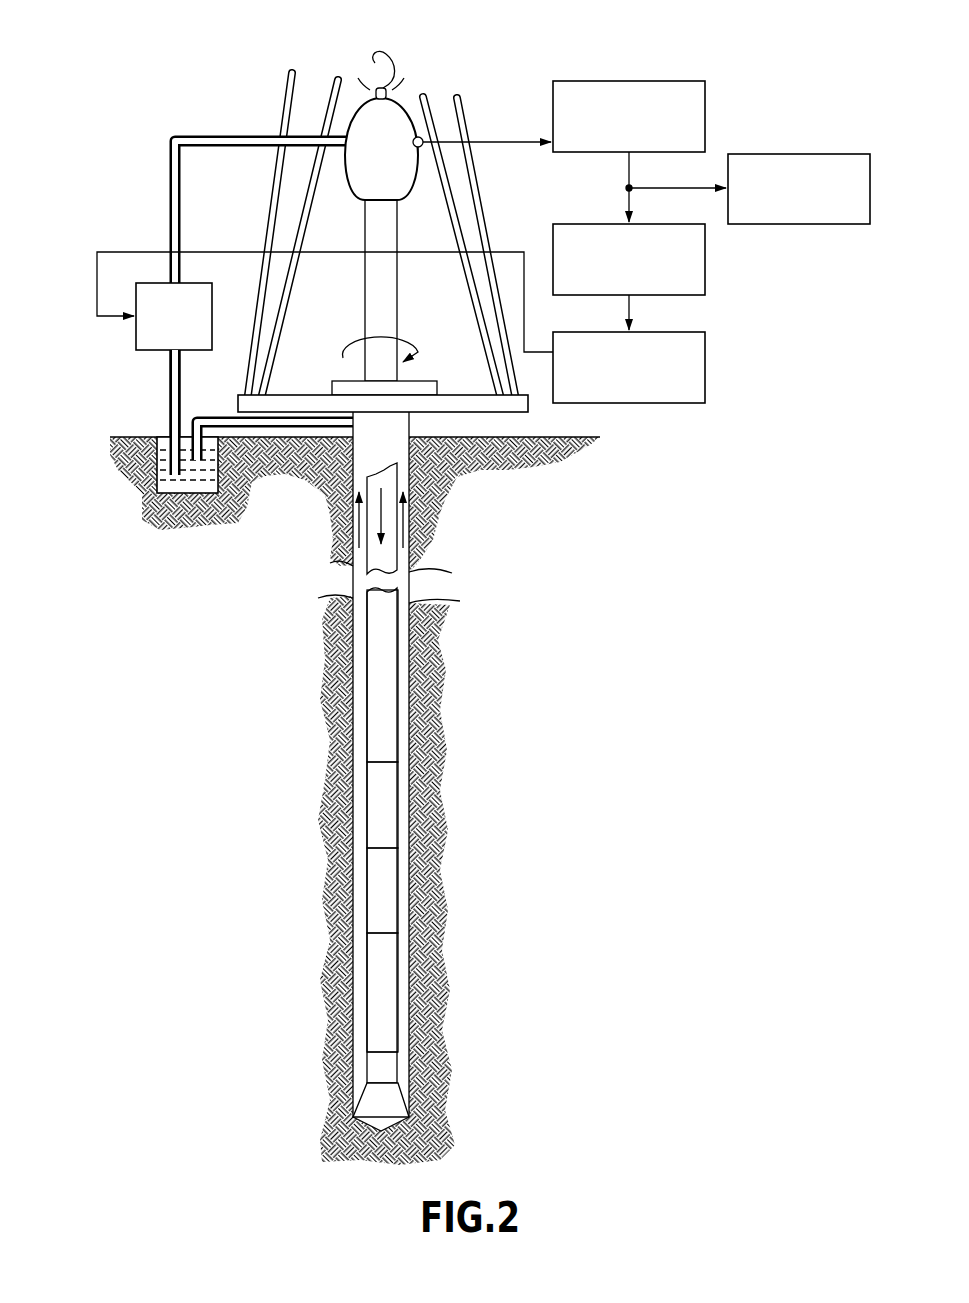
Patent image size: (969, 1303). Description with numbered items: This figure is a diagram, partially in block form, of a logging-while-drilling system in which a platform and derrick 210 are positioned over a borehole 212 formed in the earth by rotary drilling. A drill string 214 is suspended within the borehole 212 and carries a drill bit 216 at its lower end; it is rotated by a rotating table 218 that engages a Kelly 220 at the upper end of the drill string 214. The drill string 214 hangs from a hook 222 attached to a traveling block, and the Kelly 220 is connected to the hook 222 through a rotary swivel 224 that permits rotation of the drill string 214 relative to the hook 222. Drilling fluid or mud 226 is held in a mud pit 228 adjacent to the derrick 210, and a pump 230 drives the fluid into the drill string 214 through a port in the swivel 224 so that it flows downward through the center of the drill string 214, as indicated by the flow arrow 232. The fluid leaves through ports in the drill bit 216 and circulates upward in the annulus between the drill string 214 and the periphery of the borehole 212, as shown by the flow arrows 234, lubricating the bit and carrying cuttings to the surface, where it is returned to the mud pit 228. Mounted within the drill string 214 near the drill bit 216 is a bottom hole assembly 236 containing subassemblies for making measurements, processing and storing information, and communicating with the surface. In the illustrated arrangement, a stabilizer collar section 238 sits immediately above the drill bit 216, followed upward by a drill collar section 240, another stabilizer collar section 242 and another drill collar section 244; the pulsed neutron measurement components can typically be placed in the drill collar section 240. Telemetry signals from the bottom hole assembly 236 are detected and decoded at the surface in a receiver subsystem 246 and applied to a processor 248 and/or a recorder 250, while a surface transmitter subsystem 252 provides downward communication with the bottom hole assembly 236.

The platform and derrick 210 is at (558, 410).
The borehole 212 is at (410, 577).
The drill string 214 is at (331, 797).
The drill bit 216 is at (372, 1105).
The rotating table 218 is at (423, 388).
The Kelly 220 is at (385, 214).
The hook 222 is at (398, 68).
The rotary swivel 224 is at (362, 183).
The drilling fluid or mud 226 is at (147, 502).
The mud pit 228 is at (158, 463).
The pump 230 is at (200, 283).
The flow arrow 232 is at (362, 526).
The flow arrows 234 is at (405, 528).
The bottom hole assembly 236 is at (452, 1060).
The stabilizer collar section 238 is at (378, 982).
The drill collar section 240 is at (378, 908).
The stabilizer collar section 242 is at (378, 817).
The drill collar section 244 is at (366, 690).
The receiver subsystem 246 is at (676, 81).
The processor 248 is at (706, 268).
The recorder 250 is at (833, 154).
The surface transmitter subsystem 252 is at (706, 373).